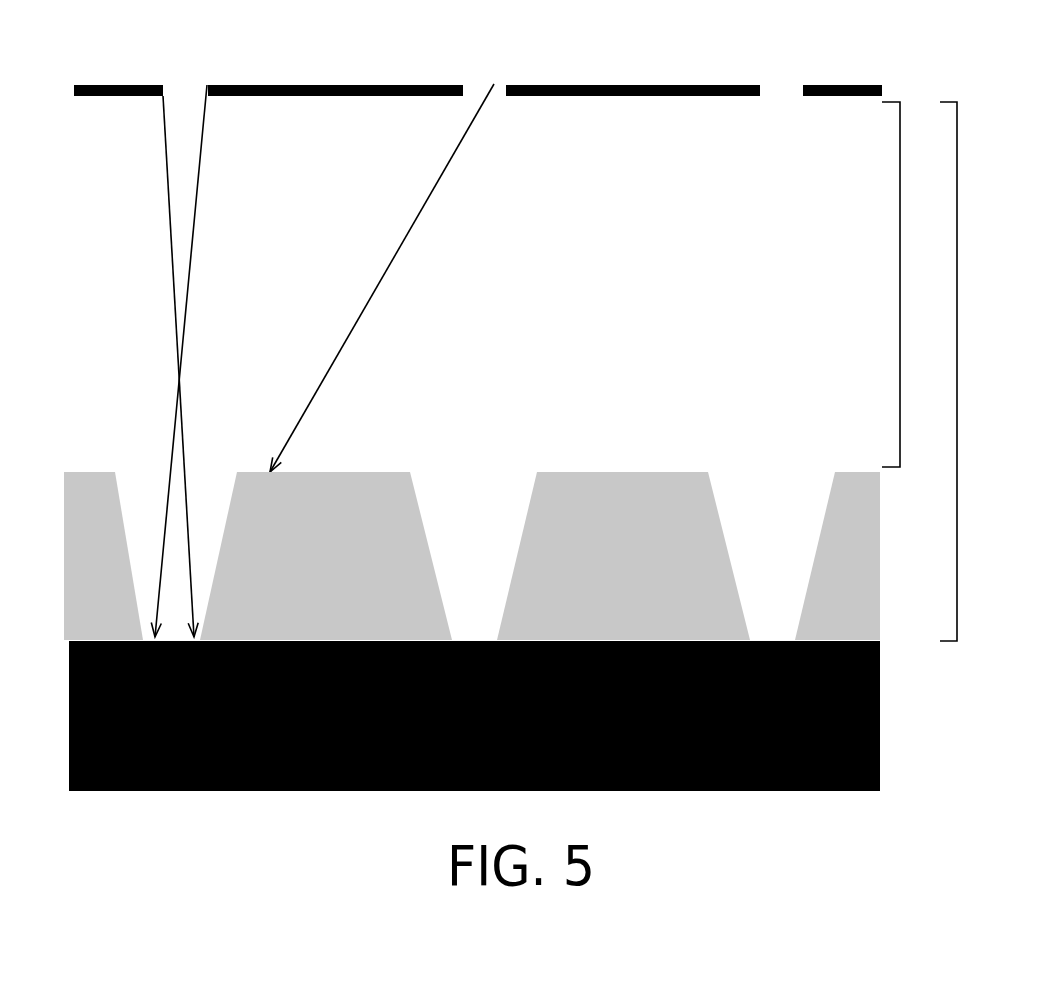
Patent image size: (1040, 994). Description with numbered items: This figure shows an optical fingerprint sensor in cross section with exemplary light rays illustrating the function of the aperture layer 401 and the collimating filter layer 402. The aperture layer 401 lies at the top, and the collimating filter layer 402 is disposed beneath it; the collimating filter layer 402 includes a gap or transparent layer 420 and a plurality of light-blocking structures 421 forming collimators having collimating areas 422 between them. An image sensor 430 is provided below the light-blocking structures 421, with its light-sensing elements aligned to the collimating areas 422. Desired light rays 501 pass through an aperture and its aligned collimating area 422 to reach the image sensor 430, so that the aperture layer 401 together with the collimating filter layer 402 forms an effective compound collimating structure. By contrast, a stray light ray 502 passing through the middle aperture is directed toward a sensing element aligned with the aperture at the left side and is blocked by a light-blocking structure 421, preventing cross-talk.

The aperture layer 401 is at (882, 92).
The collimating filter layer 402 is at (957, 357).
The gap or transparent layer 420 is at (900, 270).
The light-blocking structures 421 is at (596, 476).
The collimating areas 422 is at (480, 478).
The image sensor 430 is at (833, 792).
The desired light rays 501 is at (191, 257).
The stray light ray 502 is at (396, 257).